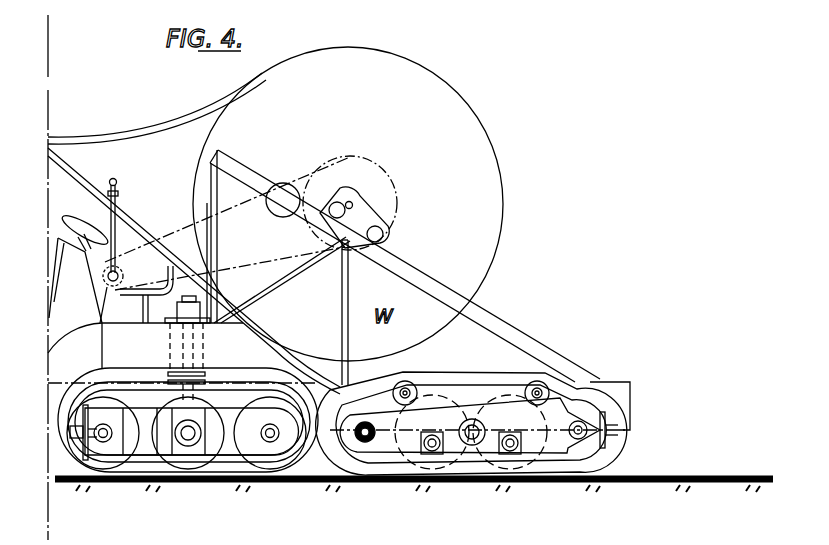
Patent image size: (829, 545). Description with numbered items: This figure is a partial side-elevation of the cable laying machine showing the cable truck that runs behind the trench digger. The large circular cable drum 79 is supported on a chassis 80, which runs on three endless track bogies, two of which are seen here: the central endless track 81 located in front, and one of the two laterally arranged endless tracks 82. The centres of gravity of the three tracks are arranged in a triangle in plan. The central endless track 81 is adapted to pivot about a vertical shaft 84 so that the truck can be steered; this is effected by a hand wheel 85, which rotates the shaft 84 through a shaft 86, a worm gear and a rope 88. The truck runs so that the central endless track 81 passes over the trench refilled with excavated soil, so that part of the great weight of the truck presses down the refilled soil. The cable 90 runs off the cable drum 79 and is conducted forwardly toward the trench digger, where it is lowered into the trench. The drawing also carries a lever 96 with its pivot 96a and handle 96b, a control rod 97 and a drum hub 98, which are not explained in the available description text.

The cable drum 79 is at (348, 204).
The chassis 80 is at (194, 271).
The endless track bogie 81 is at (227, 383).
The endless track bogie 82 is at (473, 423).
The vertical shaft 84 is at (176, 334).
The hand wheel 85 is at (83, 223).
The shaft 86 is at (75, 280).
The rope 88 is at (116, 373).
The cable 90 is at (157, 108).
The control lever 96 is at (124, 219).
The lever pivot 96a is at (119, 294).
The lever handle 96b is at (146, 288).
The control rod 97 is at (227, 223).
The reel hub 98 is at (341, 203).